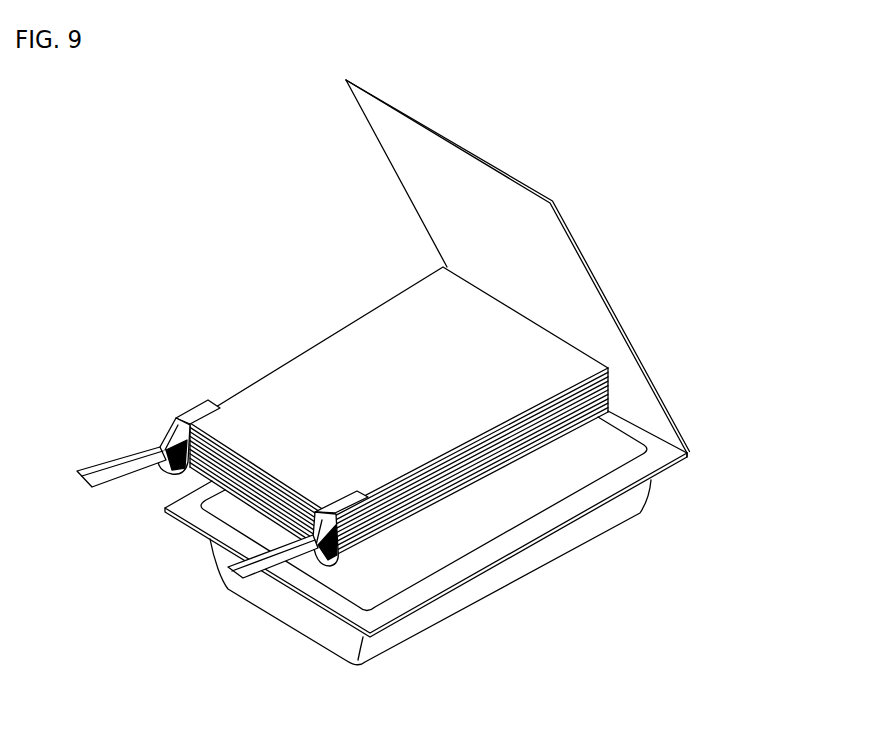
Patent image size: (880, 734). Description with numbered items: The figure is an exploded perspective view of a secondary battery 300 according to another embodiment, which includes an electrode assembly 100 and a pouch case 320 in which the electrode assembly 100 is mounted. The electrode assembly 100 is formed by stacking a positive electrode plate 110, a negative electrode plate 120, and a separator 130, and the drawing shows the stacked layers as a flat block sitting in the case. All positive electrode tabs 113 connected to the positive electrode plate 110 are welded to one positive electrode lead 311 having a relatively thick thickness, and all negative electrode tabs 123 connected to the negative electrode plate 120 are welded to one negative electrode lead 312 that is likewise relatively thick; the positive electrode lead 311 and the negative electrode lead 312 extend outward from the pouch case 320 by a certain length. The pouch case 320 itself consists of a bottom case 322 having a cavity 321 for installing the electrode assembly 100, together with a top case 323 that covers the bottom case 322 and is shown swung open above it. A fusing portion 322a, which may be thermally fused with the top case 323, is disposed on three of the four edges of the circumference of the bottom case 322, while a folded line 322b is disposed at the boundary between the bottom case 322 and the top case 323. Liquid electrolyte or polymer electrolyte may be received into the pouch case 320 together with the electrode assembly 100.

The secondary battery 300 is at (448, 392).
The top case 323 is at (397, 153).
The pouch case 320 is at (448, 558).
The cavity 321 is at (503, 522).
The bottom case 322 is at (448, 558).
The fusing portion 322a is at (347, 607).
The folded line 322b is at (667, 455).
The electrode assembly 100 is at (469, 412).
The positive electrode plate 110 is at (610, 370).
The separator 130 is at (611, 378).
The negative electrode plate 120 is at (613, 384).
The positive electrode tab 113 is at (167, 428).
The negative electrode tab 123 is at (313, 545).
The positive electrode lead 311 is at (110, 461).
The negative electrode lead 312 is at (238, 575).